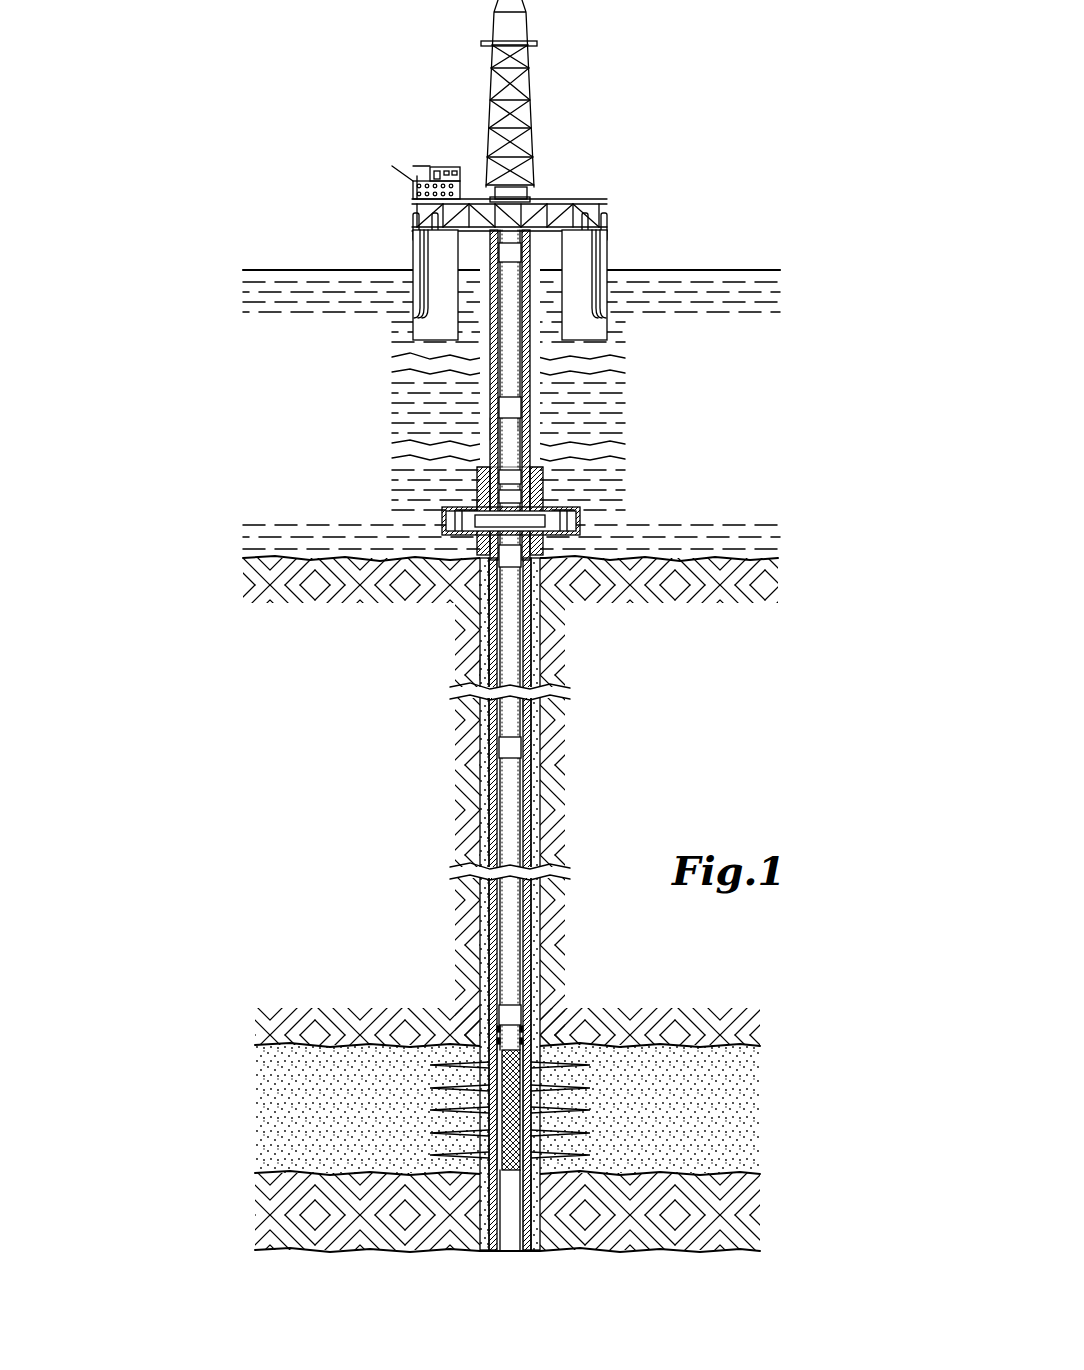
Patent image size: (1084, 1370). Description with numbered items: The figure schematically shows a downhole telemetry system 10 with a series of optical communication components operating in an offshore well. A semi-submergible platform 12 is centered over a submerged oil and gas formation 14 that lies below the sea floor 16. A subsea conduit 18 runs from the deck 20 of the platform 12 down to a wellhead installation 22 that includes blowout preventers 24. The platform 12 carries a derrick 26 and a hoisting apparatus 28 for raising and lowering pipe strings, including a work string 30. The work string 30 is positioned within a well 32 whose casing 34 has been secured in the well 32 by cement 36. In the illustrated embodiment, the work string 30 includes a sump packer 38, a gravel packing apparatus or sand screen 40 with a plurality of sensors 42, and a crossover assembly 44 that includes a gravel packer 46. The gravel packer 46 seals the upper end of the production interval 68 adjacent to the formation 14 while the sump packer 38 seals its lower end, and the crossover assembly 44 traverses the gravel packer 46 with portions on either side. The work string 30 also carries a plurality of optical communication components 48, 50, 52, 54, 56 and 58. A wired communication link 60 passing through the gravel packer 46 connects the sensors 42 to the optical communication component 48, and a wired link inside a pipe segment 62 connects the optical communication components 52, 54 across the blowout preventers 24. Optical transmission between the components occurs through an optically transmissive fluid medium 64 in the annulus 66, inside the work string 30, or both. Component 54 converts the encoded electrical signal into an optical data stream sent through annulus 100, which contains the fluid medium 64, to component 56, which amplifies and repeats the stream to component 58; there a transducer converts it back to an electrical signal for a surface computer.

The downhole telemetry system 10 is at (612, 63).
The semi-submergible platform 12 is at (577, 203).
The oil and gas formation 14 is at (715, 1058).
The sea floor 16 is at (680, 558).
The subsea conduit 18 is at (532, 408).
The deck 20 is at (550, 230).
The wellhead installation 22 is at (543, 488).
The blowout preventers 24 is at (582, 522).
The derrick 26 is at (525, 27).
The hoisting apparatus 28 is at (505, 185).
The work string 30 is at (520, 386).
The well 32 is at (543, 838).
The casing 34 is at (537, 812).
The cement 36 is at (537, 788).
The sump packer 38 is at (545, 1180).
The sand screen 40 is at (545, 1160).
The sensors 42 is at (480, 1150).
The crossover assembly 44 is at (500, 1033).
The gravel packer 46 is at (540, 1042).
The optical communication component 48 is at (502, 1003).
The optical communication component 50 is at (512, 745).
The optical communication component 52 is at (495, 568).
The optical communication component 54 is at (505, 487).
The optical communication component 56 is at (508, 406).
The optical communication component 58 is at (510, 255).
The wired communication link 60 is at (498, 1030).
The pipe segment 62 is at (488, 500).
The optically transmissive fluid medium 64 is at (542, 700).
The annulus 66 is at (486, 665).
The production interval 68 is at (535, 1110).
The annulus 100 is at (492, 425).